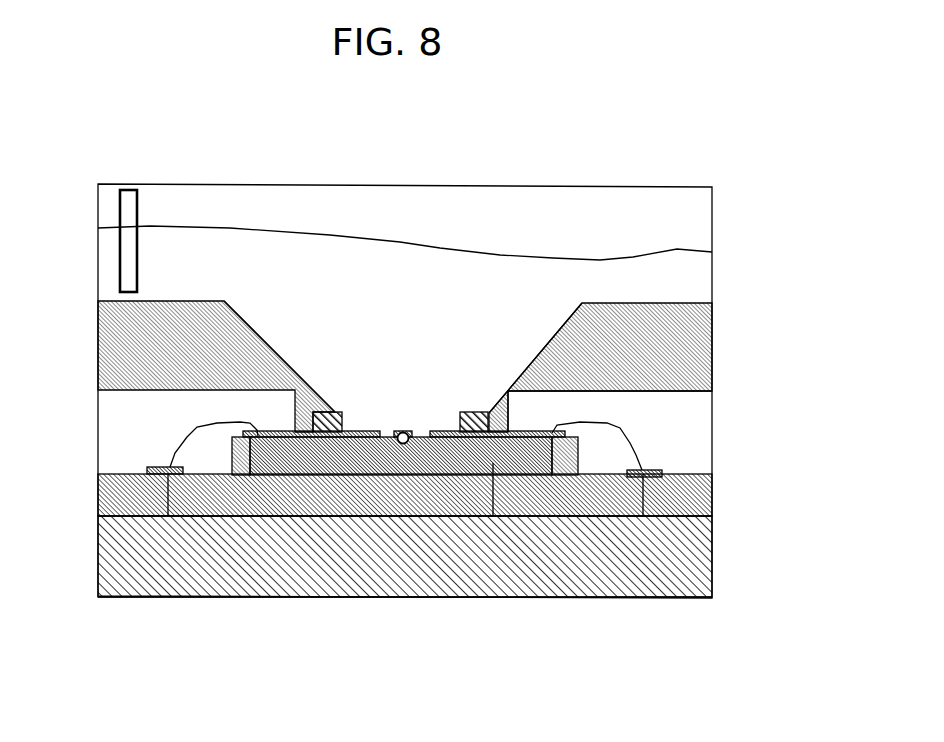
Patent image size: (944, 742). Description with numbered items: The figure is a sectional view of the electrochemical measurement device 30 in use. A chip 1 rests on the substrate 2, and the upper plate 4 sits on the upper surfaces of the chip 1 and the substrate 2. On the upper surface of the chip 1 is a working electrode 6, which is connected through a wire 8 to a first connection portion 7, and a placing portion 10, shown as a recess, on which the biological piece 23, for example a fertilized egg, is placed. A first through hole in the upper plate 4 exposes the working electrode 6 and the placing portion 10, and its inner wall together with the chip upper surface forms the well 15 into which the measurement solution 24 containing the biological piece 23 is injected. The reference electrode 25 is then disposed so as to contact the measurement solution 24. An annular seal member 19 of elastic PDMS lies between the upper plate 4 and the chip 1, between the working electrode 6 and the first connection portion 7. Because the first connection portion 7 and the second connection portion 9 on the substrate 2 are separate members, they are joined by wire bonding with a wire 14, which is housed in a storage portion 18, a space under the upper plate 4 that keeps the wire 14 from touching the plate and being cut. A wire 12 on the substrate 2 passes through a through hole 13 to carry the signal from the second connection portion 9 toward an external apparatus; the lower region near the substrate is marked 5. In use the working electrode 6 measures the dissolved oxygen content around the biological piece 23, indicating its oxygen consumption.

The chip 1 is at (405, 562).
The substrate 2 is at (440, 495).
The upper plate 4 is at (440, 366).
The rear surface of substrate 5 is at (405, 624).
The working electrode 6 is at (404, 286).
The first connection portion 7 is at (367, 551).
The wire 8 is at (387, 551).
The second connection portion 9 is at (157, 442).
The placing portion 10 is at (360, 549).
The wire 12 is at (366, 540).
The through hole 13 is at (328, 489).
The wire 14 is at (671, 435).
The well 15 is at (403, 275).
The storage portion 18 is at (649, 425).
The seal member 19 is at (339, 285).
The biological piece 23 is at (434, 291).
The measurement solution 24 is at (405, 200).
The reference electrode 25 is at (78, 236).
The electrochemical measurement device 30 is at (428, 334).